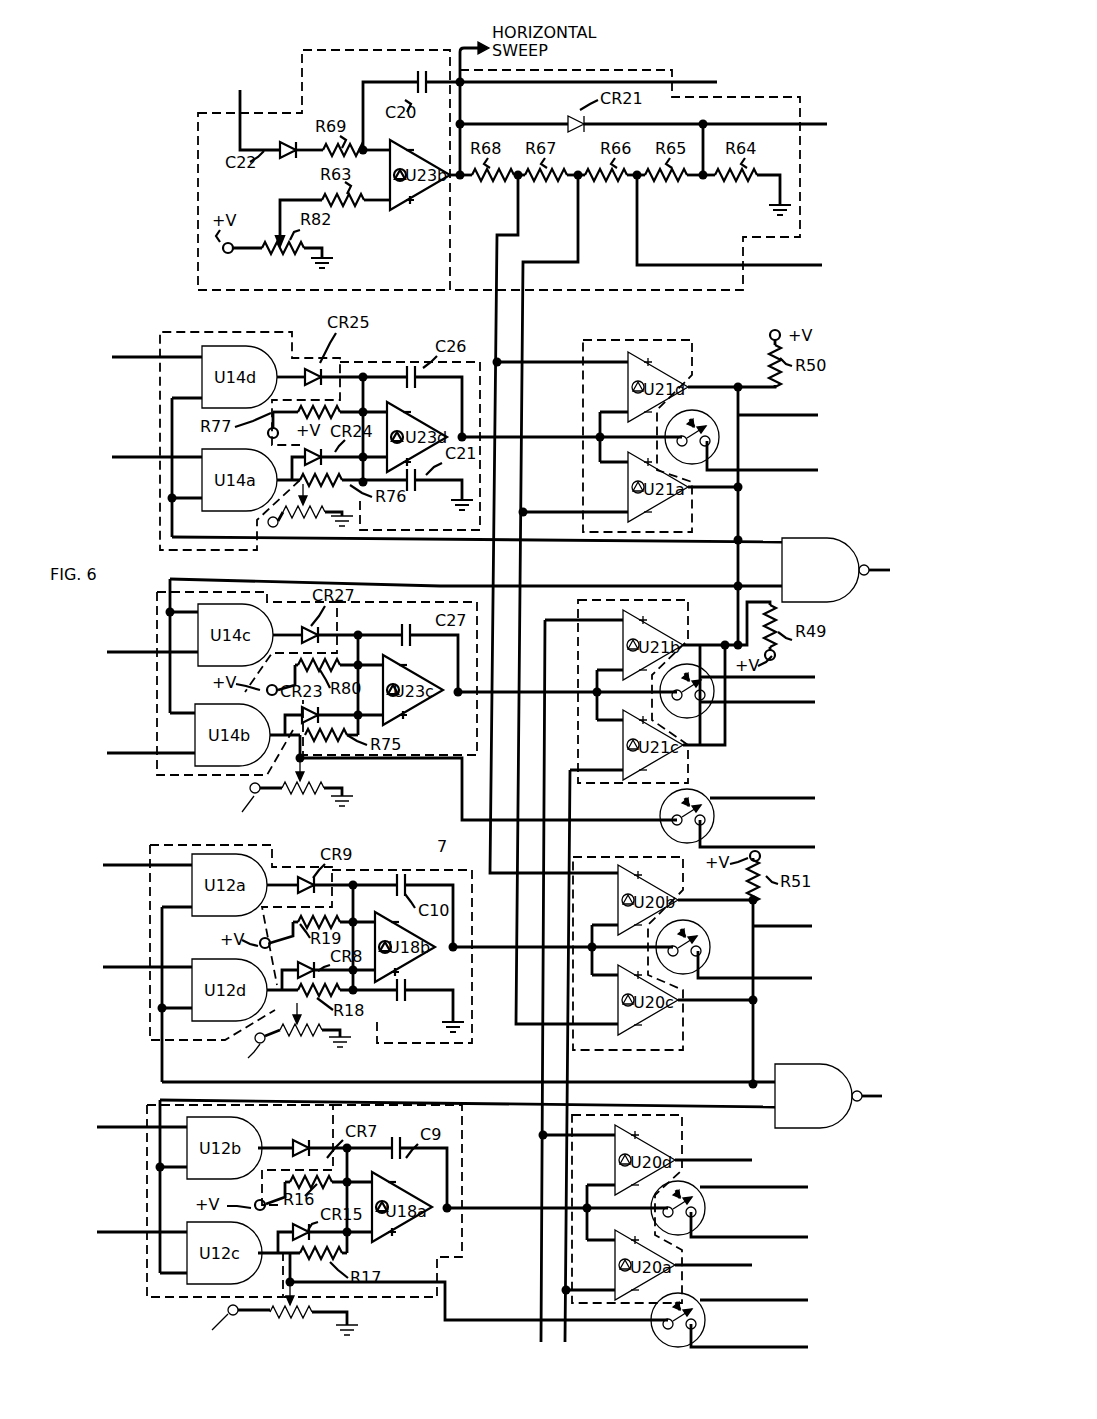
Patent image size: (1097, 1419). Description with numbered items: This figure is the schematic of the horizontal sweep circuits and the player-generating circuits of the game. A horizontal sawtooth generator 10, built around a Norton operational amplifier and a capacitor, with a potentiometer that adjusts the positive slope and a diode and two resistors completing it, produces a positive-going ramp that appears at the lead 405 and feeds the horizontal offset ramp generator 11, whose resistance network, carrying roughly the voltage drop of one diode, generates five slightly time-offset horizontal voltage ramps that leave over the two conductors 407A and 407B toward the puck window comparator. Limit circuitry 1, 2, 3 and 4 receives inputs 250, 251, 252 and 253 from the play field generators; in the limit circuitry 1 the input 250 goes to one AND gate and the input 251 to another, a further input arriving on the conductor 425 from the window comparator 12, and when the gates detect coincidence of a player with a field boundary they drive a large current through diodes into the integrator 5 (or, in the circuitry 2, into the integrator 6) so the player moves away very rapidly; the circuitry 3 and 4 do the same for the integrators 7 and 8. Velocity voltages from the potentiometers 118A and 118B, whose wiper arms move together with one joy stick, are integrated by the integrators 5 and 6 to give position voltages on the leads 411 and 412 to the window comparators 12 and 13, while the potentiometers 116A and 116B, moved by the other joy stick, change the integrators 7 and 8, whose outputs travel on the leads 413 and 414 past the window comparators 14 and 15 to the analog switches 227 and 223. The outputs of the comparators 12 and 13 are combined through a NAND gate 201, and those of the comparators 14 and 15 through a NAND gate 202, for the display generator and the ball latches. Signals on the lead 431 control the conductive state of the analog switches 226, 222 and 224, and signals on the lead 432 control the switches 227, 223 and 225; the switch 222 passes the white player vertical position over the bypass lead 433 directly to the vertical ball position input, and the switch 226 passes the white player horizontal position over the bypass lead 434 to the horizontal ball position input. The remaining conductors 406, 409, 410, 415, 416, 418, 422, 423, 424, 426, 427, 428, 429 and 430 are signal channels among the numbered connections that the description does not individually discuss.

The limit circuitry 1 is at (278, 334).
The limit circuitry 2 is at (238, 580).
The limit circuitry 3 is at (200, 844).
The limit circuitry 4 is at (146, 1298).
The integrator 5 is at (388, 350).
The integrator 6 is at (420, 584).
The integrator 7 is at (402, 956).
The integrator 8 is at (464, 1162).
The horizontal sawtooth generator 10 is at (194, 261).
The horizontal offset ramp generator 11 is at (711, 304).
The window comparator 12 is at (693, 358).
The window comparator 13 is at (691, 630).
The window comparator 14 is at (630, 854).
The window comparator 15 is at (688, 1122).
The potentiometer 116A is at (289, 1037).
The potentiometer 116B is at (288, 1324).
The potentiometer 118A is at (318, 530).
The potentiometer 118B is at (297, 794).
The NAND gate 201 is at (805, 554).
The NAND gate 202 is at (795, 1074).
The analog switch 222 is at (722, 696).
The analog switch 223 is at (708, 1214).
The analog switch 224 is at (686, 790).
The analog switch 225 is at (706, 1324).
The analog switch 226 is at (722, 445).
The analog switch 227 is at (704, 956).
The input lead 250 is at (155, 355).
The input lead 251 is at (151, 457).
The input lead 252 is at (146, 654).
The input lead 253 is at (146, 756).
The lead 405 is at (454, 44).
The conductor 406 is at (826, 130).
The conductor 407A is at (710, 86).
The conductor 407B is at (756, 270).
The conductor 409 is at (525, 346).
The conductor 410 is at (496, 344).
The lead 411 is at (535, 436).
The lead 412 is at (500, 692).
The lead 413 is at (478, 948).
The lead 414 is at (490, 1208).
The conductor 415 is at (384, 762).
The conductor 416 is at (460, 1300).
The conductor 418 is at (244, 104).
The conductor 422 is at (565, 1342).
The conductor 423 is at (536, 1340).
The conductor 424 is at (770, 848).
The conductor 425 is at (489, 546).
The conductor 426 is at (566, 594).
The conductor 427 is at (878, 568).
The conductor 428 is at (458, 1082).
The conductor 429 is at (700, 1100).
The conductor 430 is at (872, 1092).
The lead 431 is at (776, 424).
The lead 432 is at (776, 929).
The bypass lead 433 is at (770, 704).
The bypass lead 434 is at (776, 480).